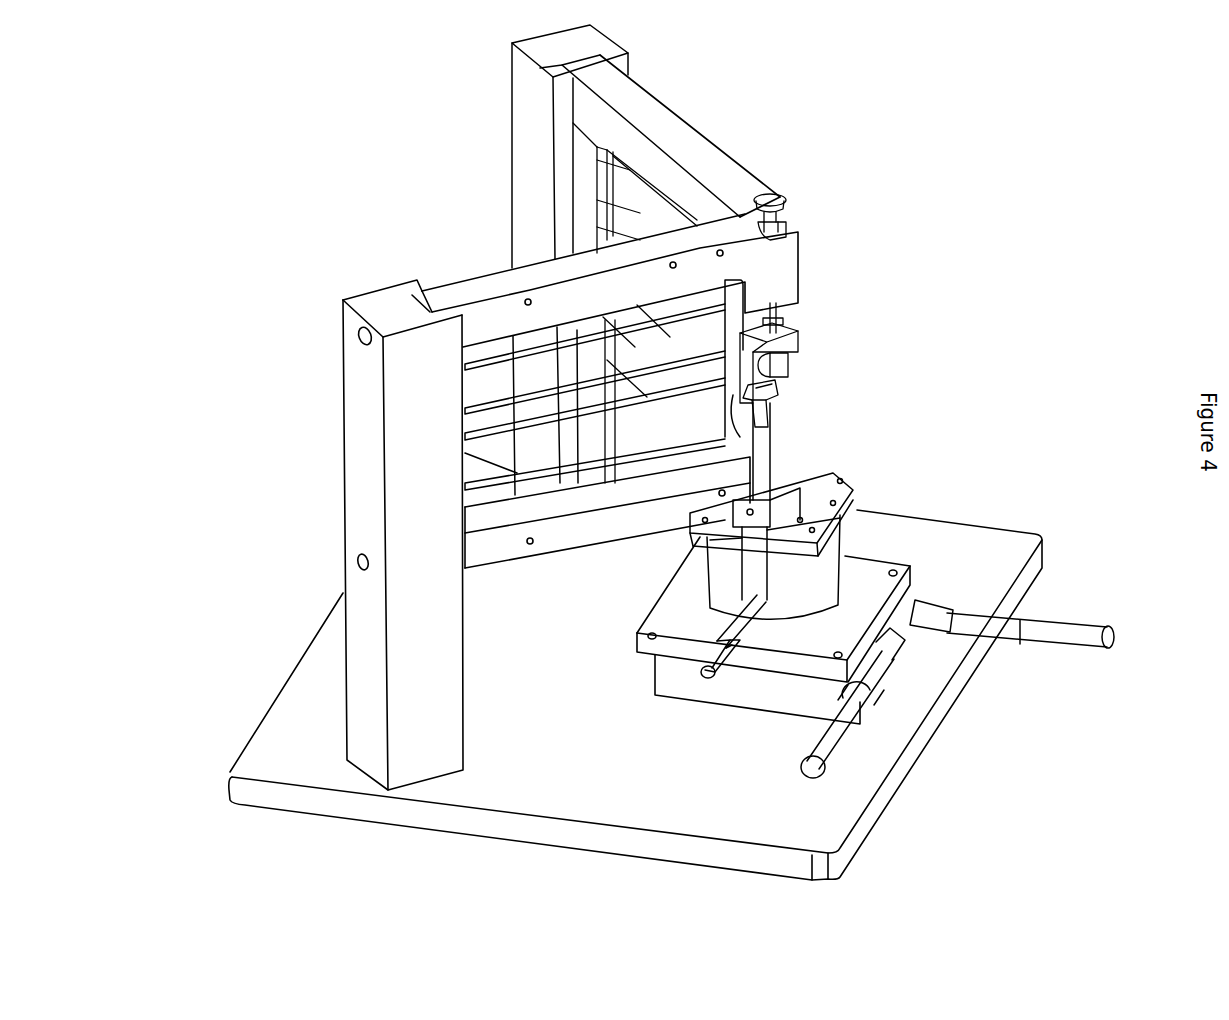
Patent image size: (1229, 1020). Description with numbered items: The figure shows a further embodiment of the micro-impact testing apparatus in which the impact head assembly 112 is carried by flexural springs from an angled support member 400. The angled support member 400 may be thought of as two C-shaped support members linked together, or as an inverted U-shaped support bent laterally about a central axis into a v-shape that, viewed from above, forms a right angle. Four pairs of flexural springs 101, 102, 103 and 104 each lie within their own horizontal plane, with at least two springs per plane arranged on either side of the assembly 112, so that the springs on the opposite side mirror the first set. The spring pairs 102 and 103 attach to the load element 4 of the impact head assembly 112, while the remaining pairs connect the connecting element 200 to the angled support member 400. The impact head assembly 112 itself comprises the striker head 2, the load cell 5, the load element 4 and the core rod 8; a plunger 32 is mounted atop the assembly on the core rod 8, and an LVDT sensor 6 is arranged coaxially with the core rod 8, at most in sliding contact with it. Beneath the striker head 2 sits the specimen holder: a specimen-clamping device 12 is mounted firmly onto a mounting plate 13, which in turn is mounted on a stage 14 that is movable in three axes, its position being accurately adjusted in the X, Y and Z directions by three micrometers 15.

The angled support member 400 is at (600, 105).
The connecting element 200 is at (598, 181).
The flexural spring 104 is at (465, 362).
The flexural spring 103 is at (483, 405).
The flexural spring 102 is at (465, 437).
The flexural spring 101 is at (477, 487).
The plunger 32 is at (793, 198).
The LVDT sensor 6 is at (797, 228).
The core rod 8 is at (784, 318).
The load element 4 is at (793, 339).
The load cell 5 is at (790, 372).
The striker head 2 is at (818, 413).
The impact head assembly 112 is at (874, 360).
The specimen-clamping device 12 is at (782, 444).
The mounting plate 13 is at (812, 497).
The stage 14 is at (662, 682).
The micrometers 15 is at (720, 670).